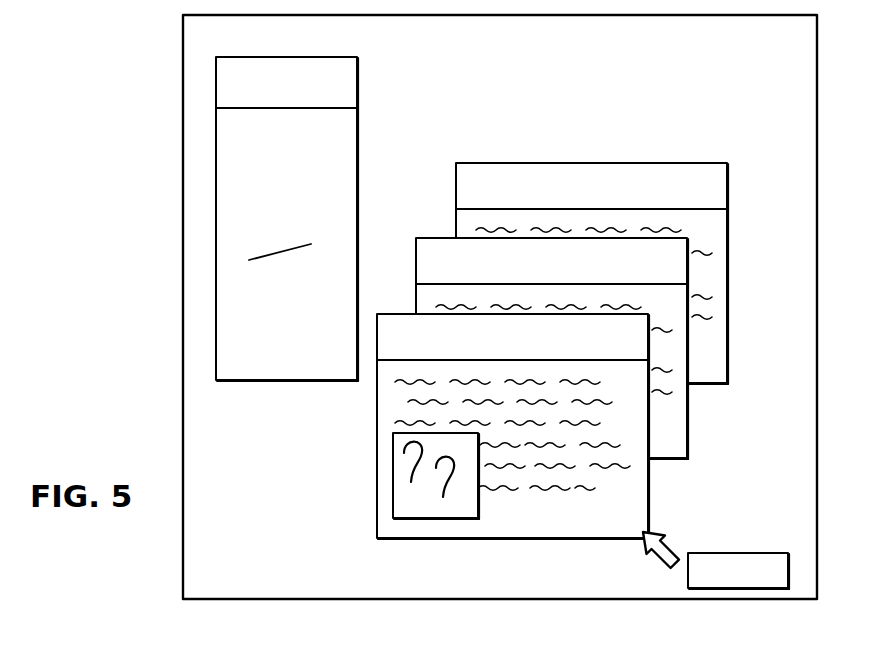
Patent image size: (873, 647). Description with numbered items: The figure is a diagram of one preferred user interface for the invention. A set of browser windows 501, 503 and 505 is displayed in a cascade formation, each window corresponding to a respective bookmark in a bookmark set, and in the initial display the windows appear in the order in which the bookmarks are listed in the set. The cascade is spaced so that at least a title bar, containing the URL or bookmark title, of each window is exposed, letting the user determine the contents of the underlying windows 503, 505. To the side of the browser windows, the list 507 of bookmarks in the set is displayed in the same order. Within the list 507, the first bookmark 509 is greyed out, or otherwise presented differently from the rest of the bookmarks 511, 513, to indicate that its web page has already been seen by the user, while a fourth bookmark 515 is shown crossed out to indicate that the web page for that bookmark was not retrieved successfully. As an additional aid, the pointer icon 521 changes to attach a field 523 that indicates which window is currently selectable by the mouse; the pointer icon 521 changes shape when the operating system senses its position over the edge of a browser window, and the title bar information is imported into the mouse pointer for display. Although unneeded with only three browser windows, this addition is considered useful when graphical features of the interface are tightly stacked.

The browser window 501 is at (649, 484).
The browser window 503 is at (688, 428).
The browser window 505 is at (727, 338).
The list of bookmarks 507 is at (216, 90).
The first bookmark 509 is at (245, 136).
The bookmark 511 is at (245, 175).
The bookmark 513 is at (245, 216).
The fourth bookmark 515 is at (245, 256).
The pointer icon 521 is at (662, 566).
The field 523 is at (760, 553).